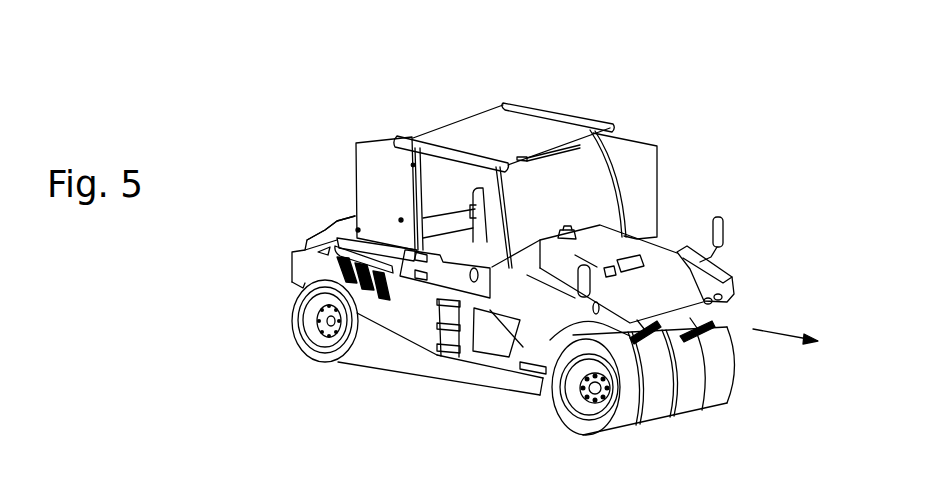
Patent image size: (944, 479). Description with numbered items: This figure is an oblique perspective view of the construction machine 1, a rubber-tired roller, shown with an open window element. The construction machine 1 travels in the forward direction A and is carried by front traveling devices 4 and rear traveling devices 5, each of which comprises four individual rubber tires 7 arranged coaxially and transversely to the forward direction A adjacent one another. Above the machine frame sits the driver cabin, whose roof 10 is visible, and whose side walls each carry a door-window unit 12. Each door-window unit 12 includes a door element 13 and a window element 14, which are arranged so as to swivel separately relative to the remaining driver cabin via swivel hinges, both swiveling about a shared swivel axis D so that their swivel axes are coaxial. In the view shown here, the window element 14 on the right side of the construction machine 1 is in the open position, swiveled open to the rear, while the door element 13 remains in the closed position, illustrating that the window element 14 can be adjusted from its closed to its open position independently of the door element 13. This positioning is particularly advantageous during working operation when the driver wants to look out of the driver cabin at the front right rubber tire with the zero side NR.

The construction machine 1 is at (627, 78).
The front traveling devices 4 is at (297, 332).
The rear traveling devices 5 is at (683, 378).
The rubber tires 7 is at (570, 177).
The roof 10 is at (508, 118).
The door-window unit 12 is at (371, 178).
The door element 13 is at (436, 272).
The window element 14 is at (370, 200).
The zero side NR is at (566, 417).
The forward direction A is at (799, 348).
The shared swivel axis D is at (417, 476).